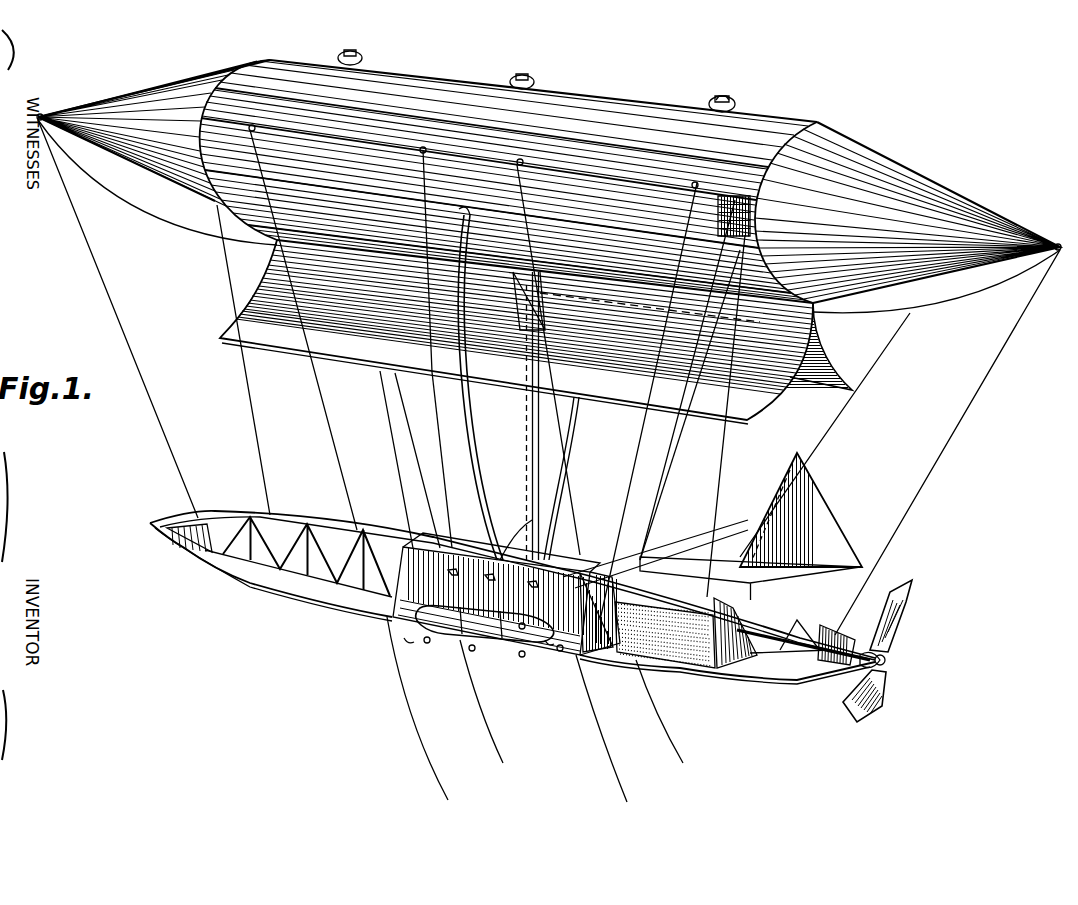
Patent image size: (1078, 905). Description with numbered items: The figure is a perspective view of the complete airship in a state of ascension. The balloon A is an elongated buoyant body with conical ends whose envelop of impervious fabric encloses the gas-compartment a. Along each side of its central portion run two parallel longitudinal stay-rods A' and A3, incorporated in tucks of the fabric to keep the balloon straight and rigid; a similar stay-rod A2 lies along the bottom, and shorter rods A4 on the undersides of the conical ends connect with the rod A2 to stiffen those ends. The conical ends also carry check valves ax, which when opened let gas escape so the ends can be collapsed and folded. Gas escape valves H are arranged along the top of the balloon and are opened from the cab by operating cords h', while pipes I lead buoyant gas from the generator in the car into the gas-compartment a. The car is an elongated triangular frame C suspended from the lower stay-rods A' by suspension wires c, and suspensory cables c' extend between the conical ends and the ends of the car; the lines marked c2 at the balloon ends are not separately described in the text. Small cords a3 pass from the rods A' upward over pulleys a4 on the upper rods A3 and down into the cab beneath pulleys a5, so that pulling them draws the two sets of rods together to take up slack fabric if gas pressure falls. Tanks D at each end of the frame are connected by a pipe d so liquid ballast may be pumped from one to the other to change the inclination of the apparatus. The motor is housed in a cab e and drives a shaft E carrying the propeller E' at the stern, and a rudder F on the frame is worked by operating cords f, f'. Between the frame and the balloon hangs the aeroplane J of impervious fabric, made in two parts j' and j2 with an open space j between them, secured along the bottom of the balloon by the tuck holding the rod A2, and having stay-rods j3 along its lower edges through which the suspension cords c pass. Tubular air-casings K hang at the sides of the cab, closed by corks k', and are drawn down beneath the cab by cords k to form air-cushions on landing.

The balloon A is at (427, 181).
The longitudinal stay-rod A' is at (496, 190).
The bottom stay-rod A2 is at (652, 312).
The upper longitudinal stay-rod A3 is at (755, 196).
The end stay-rod A4 is at (912, 289).
The check valve ax is at (42, 113).
The gas-compartment a is at (526, 450).
The cord a3 is at (340, 426).
The pulley a4 is at (256, 127).
The pulley a5 is at (560, 651).
The car frame C is at (512, 597).
The suspension wire c is at (563, 375).
The suspensory cable c' is at (549, 382).
The curved stays c2 is at (166, 226).
The tank D is at (165, 538).
The pipe d is at (628, 640).
The shaft E is at (803, 627).
The propeller E' is at (900, 651).
The motor cab e is at (686, 633).
The rudder F is at (835, 521).
The rudder operating cord f is at (655, 548).
The rudder operating cord f' is at (661, 553).
The gas escape valve H is at (354, 56).
The valve operating cord h' is at (733, 78).
The gas pipe I is at (575, 432).
The aeroplane J is at (822, 352).
The open space j is at (514, 416).
The aeroplane part j' is at (504, 553).
The aeroplane part j2 is at (715, 368).
The aeroplane stay-rod j3 is at (378, 376).
The tubular air-casing K is at (500, 644).
The casing cord k is at (491, 578).
The plug k' is at (479, 669).